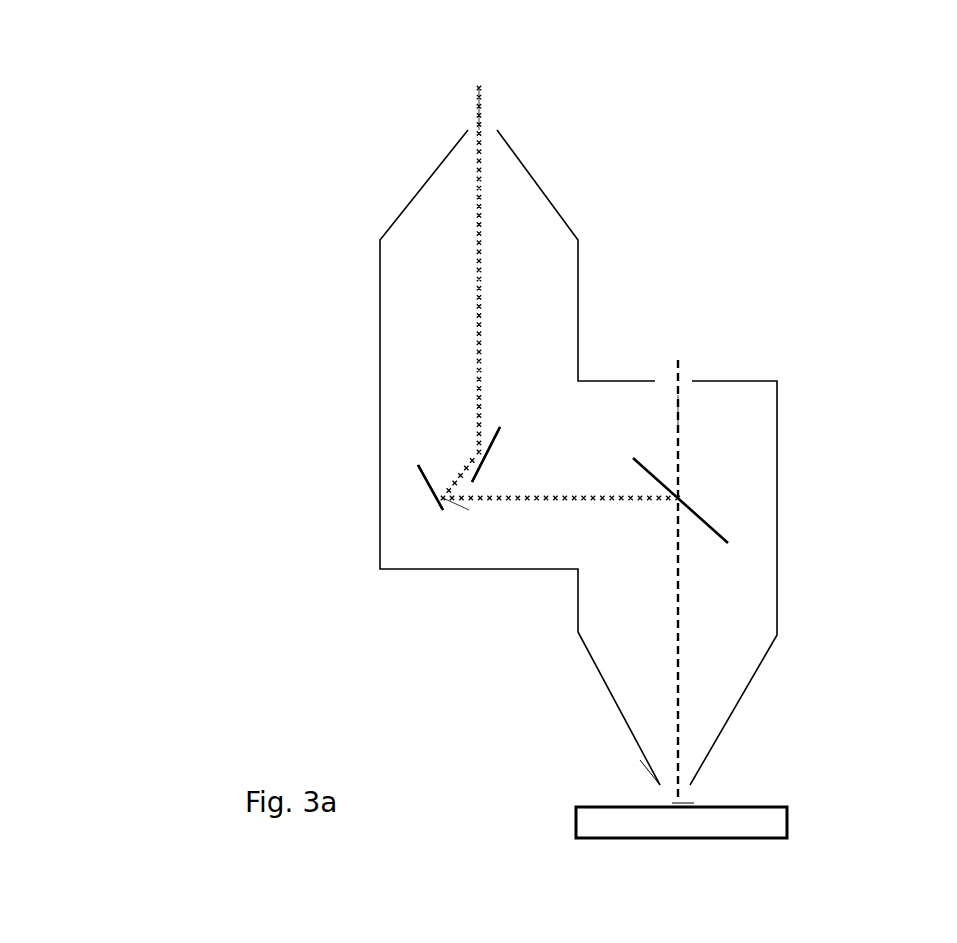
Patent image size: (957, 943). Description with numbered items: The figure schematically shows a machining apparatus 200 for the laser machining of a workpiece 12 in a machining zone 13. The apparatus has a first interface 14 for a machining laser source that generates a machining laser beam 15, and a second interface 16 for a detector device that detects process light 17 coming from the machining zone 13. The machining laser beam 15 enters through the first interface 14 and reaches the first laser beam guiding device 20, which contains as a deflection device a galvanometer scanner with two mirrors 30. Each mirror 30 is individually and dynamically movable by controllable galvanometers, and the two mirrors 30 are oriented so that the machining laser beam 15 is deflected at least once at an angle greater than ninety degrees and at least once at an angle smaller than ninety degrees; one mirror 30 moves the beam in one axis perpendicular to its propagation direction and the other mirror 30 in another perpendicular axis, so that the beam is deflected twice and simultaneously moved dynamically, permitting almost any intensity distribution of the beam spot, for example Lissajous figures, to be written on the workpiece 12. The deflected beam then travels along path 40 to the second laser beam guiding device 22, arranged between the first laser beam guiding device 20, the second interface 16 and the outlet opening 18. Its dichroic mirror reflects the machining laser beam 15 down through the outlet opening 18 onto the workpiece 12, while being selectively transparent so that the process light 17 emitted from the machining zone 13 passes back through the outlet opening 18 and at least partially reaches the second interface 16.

The machining apparatus 200 is at (231, 158).
The first interface 14 is at (490, 122).
The machining laser beam 15 is at (478, 111).
The second interface 16 is at (685, 350).
The process light 17 is at (680, 410).
The second laser beam guiding device 22 is at (728, 475).
The first laser beam guiding device 20 is at (396, 475).
The mirrors 30 is at (480, 433).
The deflected beam path 40 is at (469, 510).
The outlet opening 18 is at (650, 782).
The machining zone 13 is at (690, 803).
The workpiece 12 is at (778, 815).